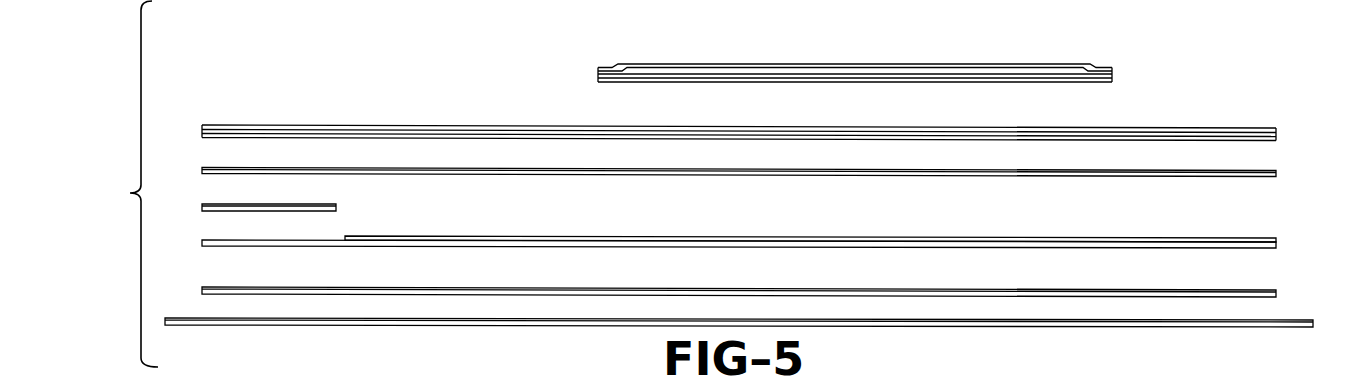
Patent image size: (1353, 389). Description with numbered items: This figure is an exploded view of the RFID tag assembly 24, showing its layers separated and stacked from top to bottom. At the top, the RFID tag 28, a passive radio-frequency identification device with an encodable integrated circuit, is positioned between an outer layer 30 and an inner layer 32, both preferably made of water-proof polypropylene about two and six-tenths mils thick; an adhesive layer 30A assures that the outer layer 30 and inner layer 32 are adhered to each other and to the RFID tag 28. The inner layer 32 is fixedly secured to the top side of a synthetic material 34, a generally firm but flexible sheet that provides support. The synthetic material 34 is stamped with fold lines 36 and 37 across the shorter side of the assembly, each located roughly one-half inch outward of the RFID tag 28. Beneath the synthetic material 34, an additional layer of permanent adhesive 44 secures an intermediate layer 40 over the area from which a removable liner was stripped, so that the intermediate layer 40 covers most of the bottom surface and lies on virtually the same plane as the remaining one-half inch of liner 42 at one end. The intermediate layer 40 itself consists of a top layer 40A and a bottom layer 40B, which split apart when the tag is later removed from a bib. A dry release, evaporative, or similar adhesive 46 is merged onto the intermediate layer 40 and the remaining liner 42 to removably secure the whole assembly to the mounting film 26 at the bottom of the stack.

The RFID tag assembly 24 is at (130, 193).
The mounting film 26 is at (297, 325).
The RFID tag 28 is at (730, 74).
The outer layer 30 is at (809, 64).
The adhesive layer 30A is at (948, 68).
The inner layer 32 is at (883, 83).
The synthetic material 34 is at (378, 125).
The fold line 36 is at (552, 137).
The fold line 37 is at (1158, 138).
The intermediate layer 40 is at (739, 235).
The top layer 40A is at (797, 238).
The bottom layer 40B is at (824, 247).
The liner 42 is at (217, 205).
The permanent adhesive 44 is at (1120, 176).
The dry release adhesive 46 is at (224, 287).